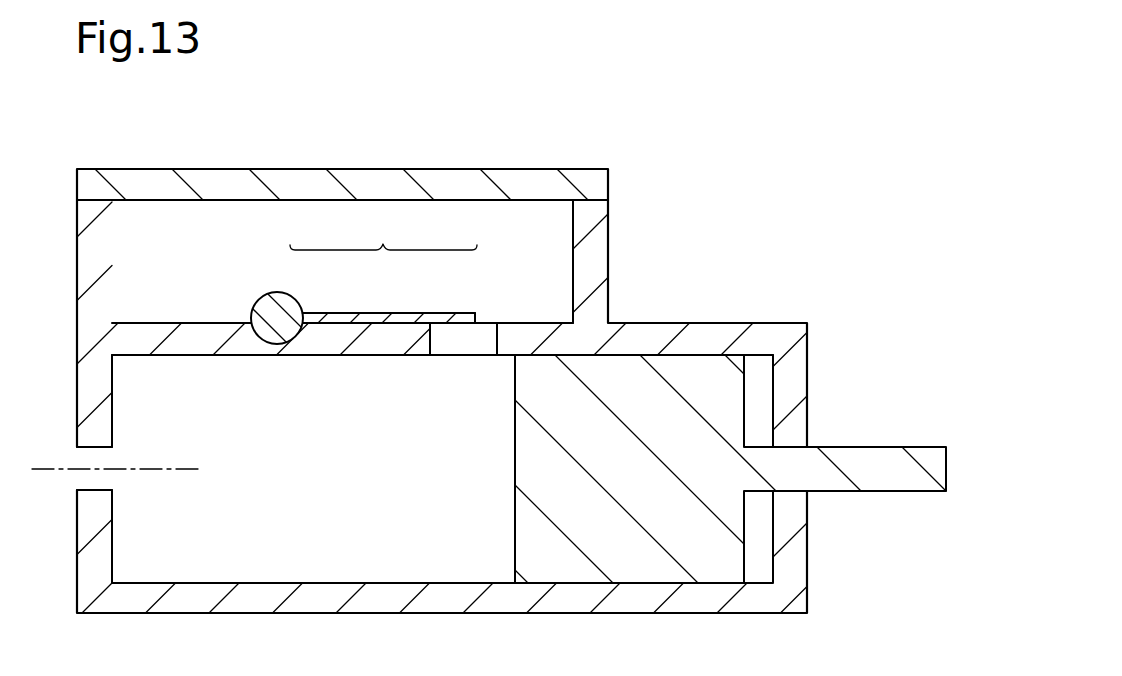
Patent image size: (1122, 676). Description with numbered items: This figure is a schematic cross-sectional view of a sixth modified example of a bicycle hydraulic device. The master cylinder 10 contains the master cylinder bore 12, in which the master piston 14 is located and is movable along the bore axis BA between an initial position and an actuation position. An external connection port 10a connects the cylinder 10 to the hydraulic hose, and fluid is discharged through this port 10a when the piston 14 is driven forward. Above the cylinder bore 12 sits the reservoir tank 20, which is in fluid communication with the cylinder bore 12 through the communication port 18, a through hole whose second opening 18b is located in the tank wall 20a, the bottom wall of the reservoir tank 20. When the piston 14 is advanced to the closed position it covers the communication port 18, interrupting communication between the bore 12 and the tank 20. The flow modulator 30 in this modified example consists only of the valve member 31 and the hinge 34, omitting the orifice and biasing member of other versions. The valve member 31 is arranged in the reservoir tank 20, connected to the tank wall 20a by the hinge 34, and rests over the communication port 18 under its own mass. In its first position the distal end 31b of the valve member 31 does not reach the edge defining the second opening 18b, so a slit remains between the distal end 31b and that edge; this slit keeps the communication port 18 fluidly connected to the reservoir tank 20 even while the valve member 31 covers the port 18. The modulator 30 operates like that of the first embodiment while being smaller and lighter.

The master cylinder 10 is at (710, 333).
The external connection port 10a is at (90, 488).
The master cylinder bore 12 is at (362, 355).
The master piston 14 is at (660, 573).
The communication port 18 is at (440, 343).
The second opening 18b is at (497, 322).
The reservoir tank 20 is at (593, 256).
The tank wall 20a is at (148, 322).
The flow modulator 30 is at (365, 277).
The valve member 31 is at (397, 313).
The distal end 31b is at (480, 318).
The hinge 34 is at (290, 306).
The bore axis BA is at (62, 467).